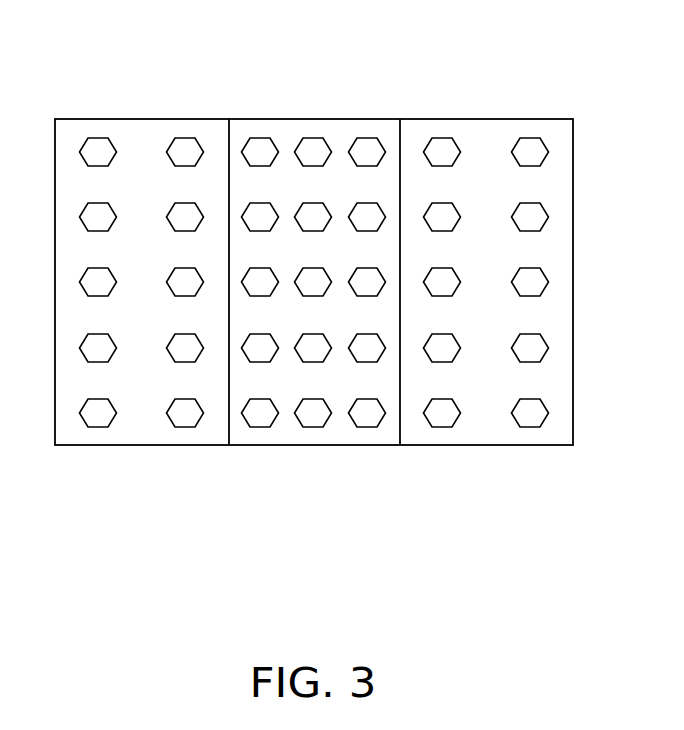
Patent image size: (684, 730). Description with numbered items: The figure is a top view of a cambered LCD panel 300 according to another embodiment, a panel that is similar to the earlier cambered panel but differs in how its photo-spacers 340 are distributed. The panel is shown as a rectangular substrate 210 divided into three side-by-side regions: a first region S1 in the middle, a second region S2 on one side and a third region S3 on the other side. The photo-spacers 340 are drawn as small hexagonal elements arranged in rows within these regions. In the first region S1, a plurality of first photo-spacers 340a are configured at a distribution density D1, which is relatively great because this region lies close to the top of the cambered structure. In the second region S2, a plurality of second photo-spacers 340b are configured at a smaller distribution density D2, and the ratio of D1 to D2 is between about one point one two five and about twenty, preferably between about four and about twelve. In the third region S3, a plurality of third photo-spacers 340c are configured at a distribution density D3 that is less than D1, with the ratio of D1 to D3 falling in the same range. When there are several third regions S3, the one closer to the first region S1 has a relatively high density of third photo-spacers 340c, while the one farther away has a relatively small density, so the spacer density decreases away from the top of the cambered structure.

The cambered LCD panel 300 is at (665, 550).
The substrate (plate body) 210 is at (560, 152).
The photo-spacers 340 is at (447, 51).
The first photo-spacers 340a is at (315, 150).
The second photo-spacers 340b is at (183, 150).
The third photo-spacers 340c is at (445, 150).
The first region S1 is at (230, 457).
The second region S2 is at (55, 457).
The third region S3 is at (573, 457).